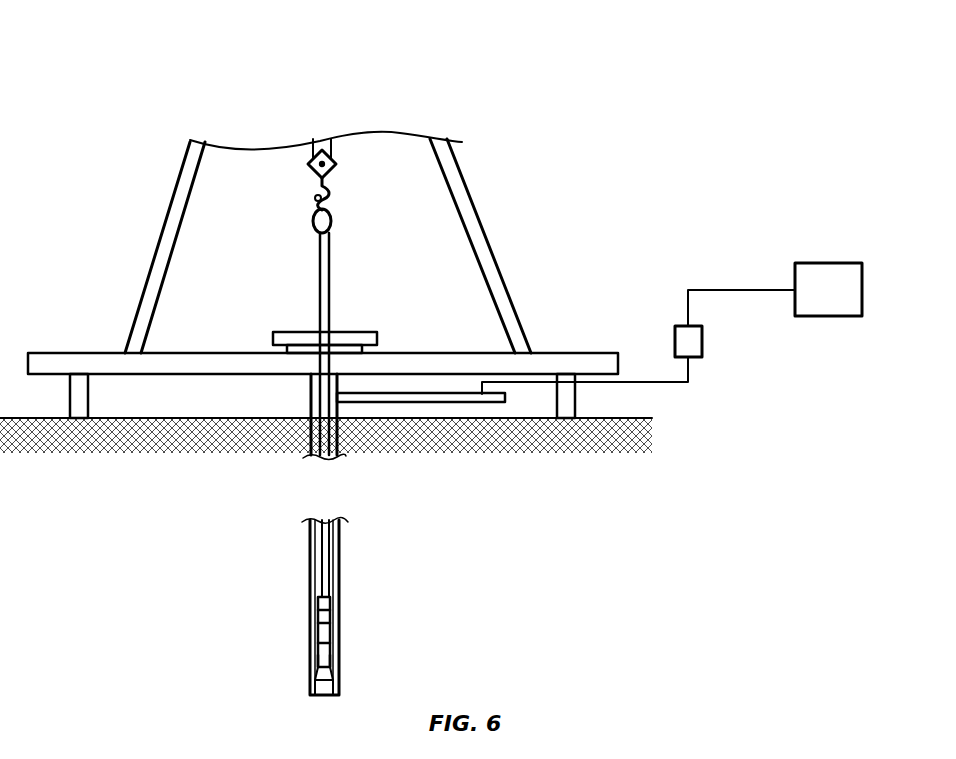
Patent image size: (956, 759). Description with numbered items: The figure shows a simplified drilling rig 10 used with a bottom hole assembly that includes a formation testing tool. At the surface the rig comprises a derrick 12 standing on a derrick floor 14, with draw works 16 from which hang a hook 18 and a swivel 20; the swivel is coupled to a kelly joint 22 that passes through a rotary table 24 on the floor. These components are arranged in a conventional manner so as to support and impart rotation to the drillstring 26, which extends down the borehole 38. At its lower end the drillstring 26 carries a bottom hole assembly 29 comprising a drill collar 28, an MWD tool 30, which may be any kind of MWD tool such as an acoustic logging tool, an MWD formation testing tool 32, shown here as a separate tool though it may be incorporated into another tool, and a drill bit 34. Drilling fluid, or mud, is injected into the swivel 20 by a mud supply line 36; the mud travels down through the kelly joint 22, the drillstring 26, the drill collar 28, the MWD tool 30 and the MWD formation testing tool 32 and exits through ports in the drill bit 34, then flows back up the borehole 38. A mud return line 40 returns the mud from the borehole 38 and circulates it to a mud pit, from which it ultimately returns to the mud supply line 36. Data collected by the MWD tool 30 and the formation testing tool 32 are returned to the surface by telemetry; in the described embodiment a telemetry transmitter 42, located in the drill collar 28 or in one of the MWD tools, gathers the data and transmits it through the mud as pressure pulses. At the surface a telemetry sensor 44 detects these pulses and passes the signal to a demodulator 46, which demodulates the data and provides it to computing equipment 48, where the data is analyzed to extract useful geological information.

The drilling rig 10 is at (116, 56).
The derrick 12 is at (472, 205).
The derrick floor 14 is at (470, 352).
The draw works 16 is at (332, 140).
The hook 18 is at (335, 203).
The swivel 20 is at (333, 222).
The kelly joint 22 is at (331, 292).
The rotary table 24 is at (278, 331).
The drillstring 26 is at (318, 571).
The drill collar 28 is at (318, 612).
The bottom hole assembly 29 is at (330, 628).
The MWD tool 30 is at (318, 637).
The MWD formation testing tool 32 is at (330, 655).
The drill bit 34 is at (316, 670).
The mud supply line 36 is at (290, 215).
The borehole 38 is at (340, 558).
The mud return line 40 is at (407, 402).
The telemetry transmitter 42 is at (330, 600).
The telemetry sensor 44 is at (482, 402).
The demodulator 46 is at (703, 342).
The computing equipment 48 is at (815, 263).